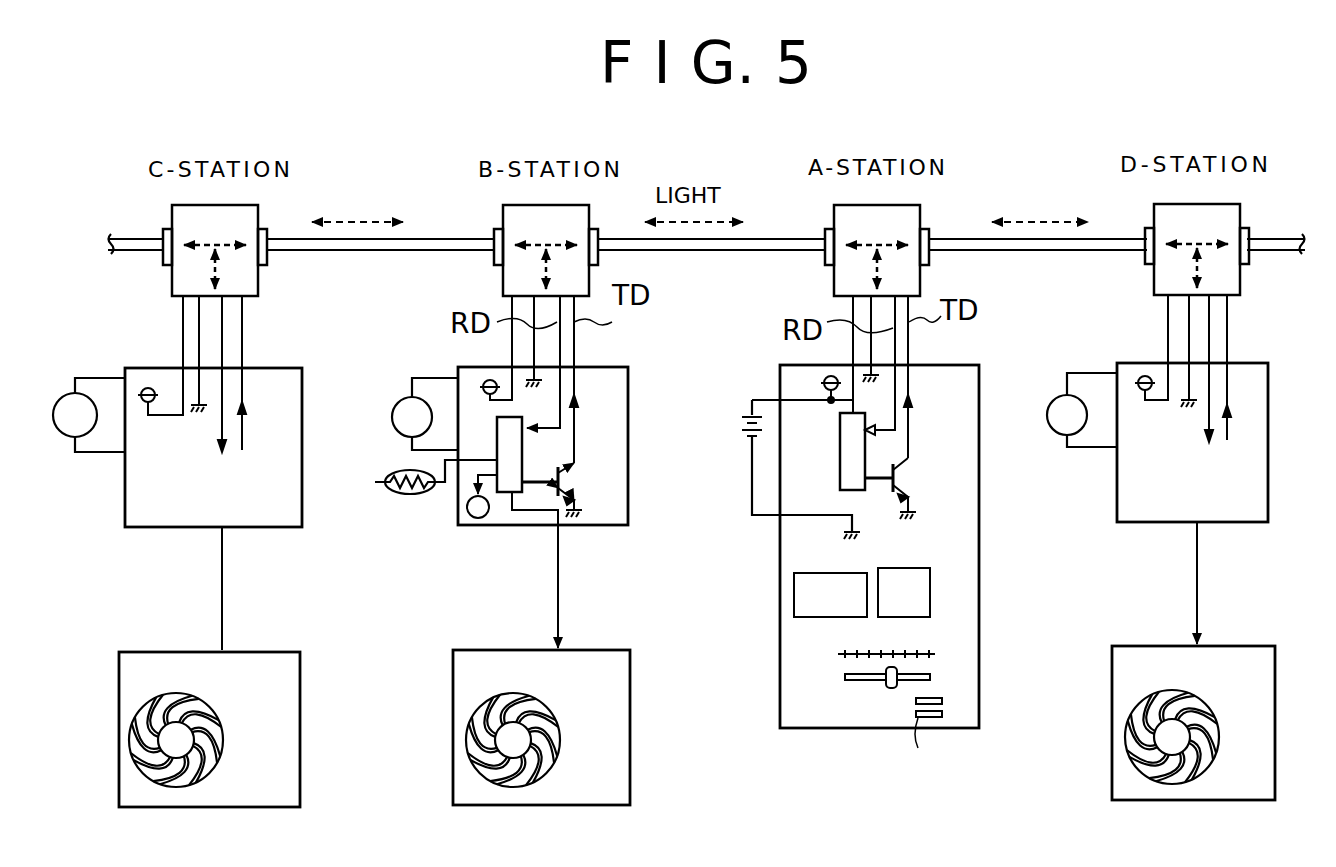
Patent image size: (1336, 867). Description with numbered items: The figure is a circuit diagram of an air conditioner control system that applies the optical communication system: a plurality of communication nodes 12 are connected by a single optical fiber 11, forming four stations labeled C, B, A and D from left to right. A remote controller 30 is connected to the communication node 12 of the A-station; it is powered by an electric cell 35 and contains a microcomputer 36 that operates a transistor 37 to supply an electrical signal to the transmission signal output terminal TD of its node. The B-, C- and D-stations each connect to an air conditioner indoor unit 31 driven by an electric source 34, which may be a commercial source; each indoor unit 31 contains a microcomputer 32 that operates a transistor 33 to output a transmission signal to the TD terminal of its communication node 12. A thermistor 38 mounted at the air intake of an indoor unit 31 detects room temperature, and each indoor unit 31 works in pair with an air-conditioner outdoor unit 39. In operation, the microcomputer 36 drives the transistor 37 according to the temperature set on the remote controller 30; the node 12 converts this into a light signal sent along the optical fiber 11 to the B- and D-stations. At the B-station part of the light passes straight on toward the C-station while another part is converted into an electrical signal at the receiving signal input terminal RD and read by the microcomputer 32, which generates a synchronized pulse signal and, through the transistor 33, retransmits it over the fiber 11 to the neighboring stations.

The optical fiber 11 is at (442, 238).
The communication node 12 is at (256, 208).
The remote controller 30 is at (955, 365).
The air conditioner indoor unit 31 is at (276, 367).
The microcomputer 32 is at (525, 447).
The transistor 33 is at (578, 481).
The electric source 34 is at (390, 417).
The electric cell 35 is at (743, 422).
The microcomputer 36 is at (868, 447).
The transistor 37 is at (905, 481).
The thermistor 38 is at (402, 494).
The air-conditioner outdoor unit 39 is at (300, 745).